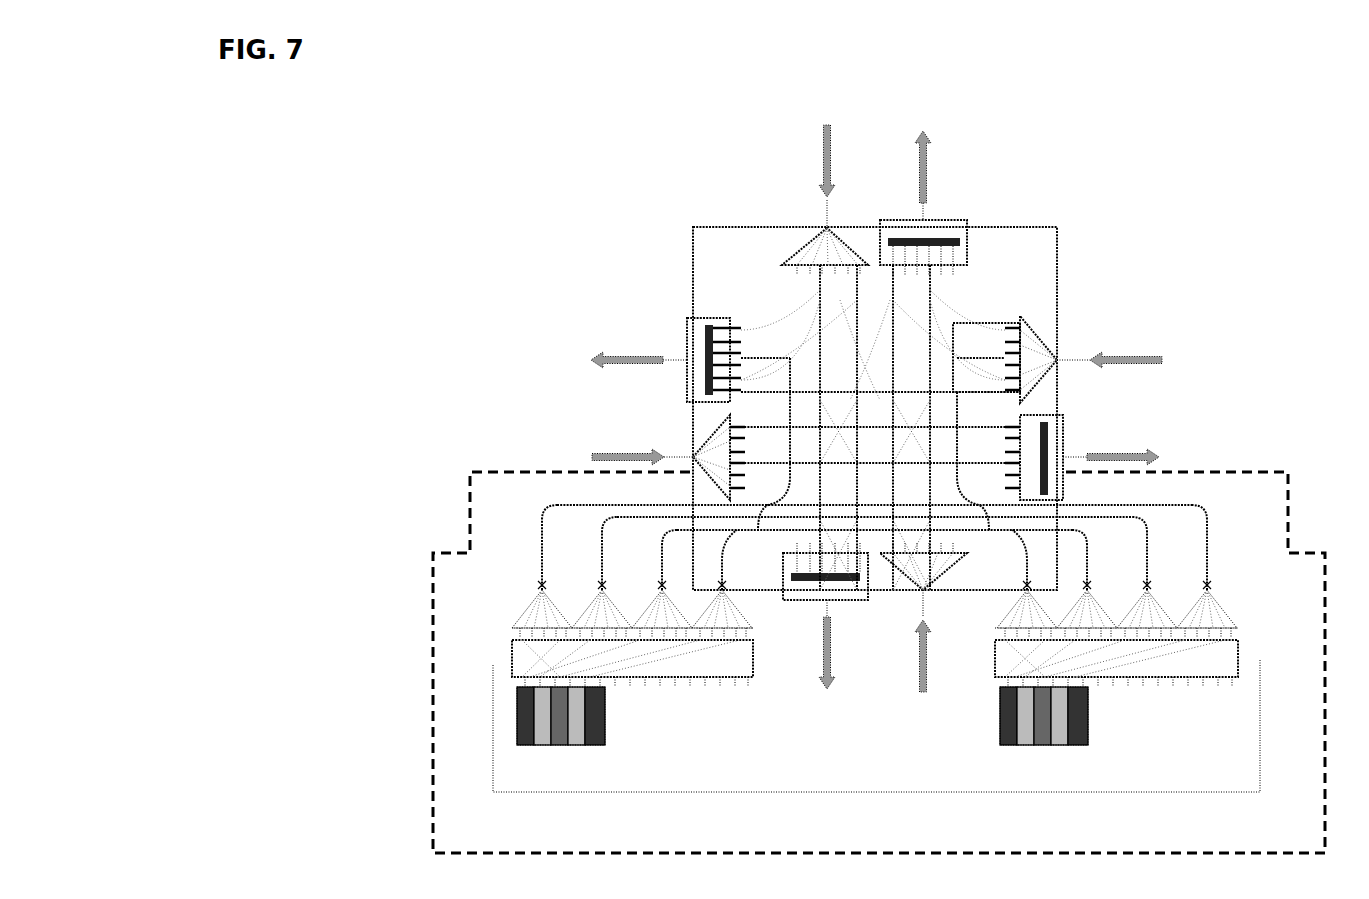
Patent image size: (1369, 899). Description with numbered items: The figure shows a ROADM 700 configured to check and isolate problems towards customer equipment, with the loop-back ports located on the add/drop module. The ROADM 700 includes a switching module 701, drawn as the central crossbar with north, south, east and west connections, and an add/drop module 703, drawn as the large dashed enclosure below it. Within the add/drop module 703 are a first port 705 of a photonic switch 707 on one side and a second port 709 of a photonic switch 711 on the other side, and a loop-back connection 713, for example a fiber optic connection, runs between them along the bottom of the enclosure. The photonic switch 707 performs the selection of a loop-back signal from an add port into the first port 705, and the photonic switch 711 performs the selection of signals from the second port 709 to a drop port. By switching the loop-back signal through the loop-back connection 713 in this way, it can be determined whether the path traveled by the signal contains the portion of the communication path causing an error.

The ROADM 700 is at (420, 121).
The switching module 701 is at (686, 271).
The add/drop module 703 is at (425, 610).
The first port 705 is at (508, 658).
The photonic switch 707 is at (770, 680).
The second port 709 is at (1248, 658).
The photonic switch 711 is at (990, 680).
The loop-back connection 713 is at (862, 798).